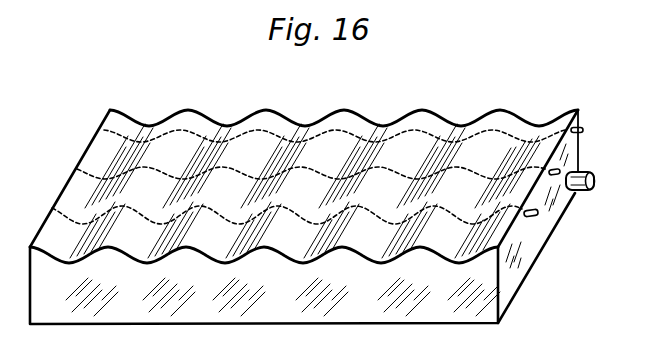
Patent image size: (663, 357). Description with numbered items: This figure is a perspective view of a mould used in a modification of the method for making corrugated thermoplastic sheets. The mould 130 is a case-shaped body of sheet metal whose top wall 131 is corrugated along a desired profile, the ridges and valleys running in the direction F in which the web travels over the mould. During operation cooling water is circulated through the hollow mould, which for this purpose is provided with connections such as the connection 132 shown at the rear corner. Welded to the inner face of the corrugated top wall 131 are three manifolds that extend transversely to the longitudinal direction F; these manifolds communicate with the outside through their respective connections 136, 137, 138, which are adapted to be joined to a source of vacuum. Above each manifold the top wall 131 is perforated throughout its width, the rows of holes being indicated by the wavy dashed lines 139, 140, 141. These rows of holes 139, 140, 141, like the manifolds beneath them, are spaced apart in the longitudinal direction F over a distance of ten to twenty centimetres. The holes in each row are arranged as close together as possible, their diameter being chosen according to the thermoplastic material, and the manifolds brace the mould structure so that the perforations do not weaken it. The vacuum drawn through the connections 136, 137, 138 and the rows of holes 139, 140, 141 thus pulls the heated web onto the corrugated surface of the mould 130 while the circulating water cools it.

The sheet metal case-shaped mould 130 is at (470, 315).
The top wall 131 is at (277, 127).
The connection 132 is at (583, 191).
The connection 136 is at (580, 127).
The connection 137 is at (559, 170).
The connection 138 is at (534, 220).
The row of holes 139 is at (62, 203).
The row of holes 140 is at (82, 167).
The row of holes 141 is at (116, 128).
The direction of travel F is at (292, 237).